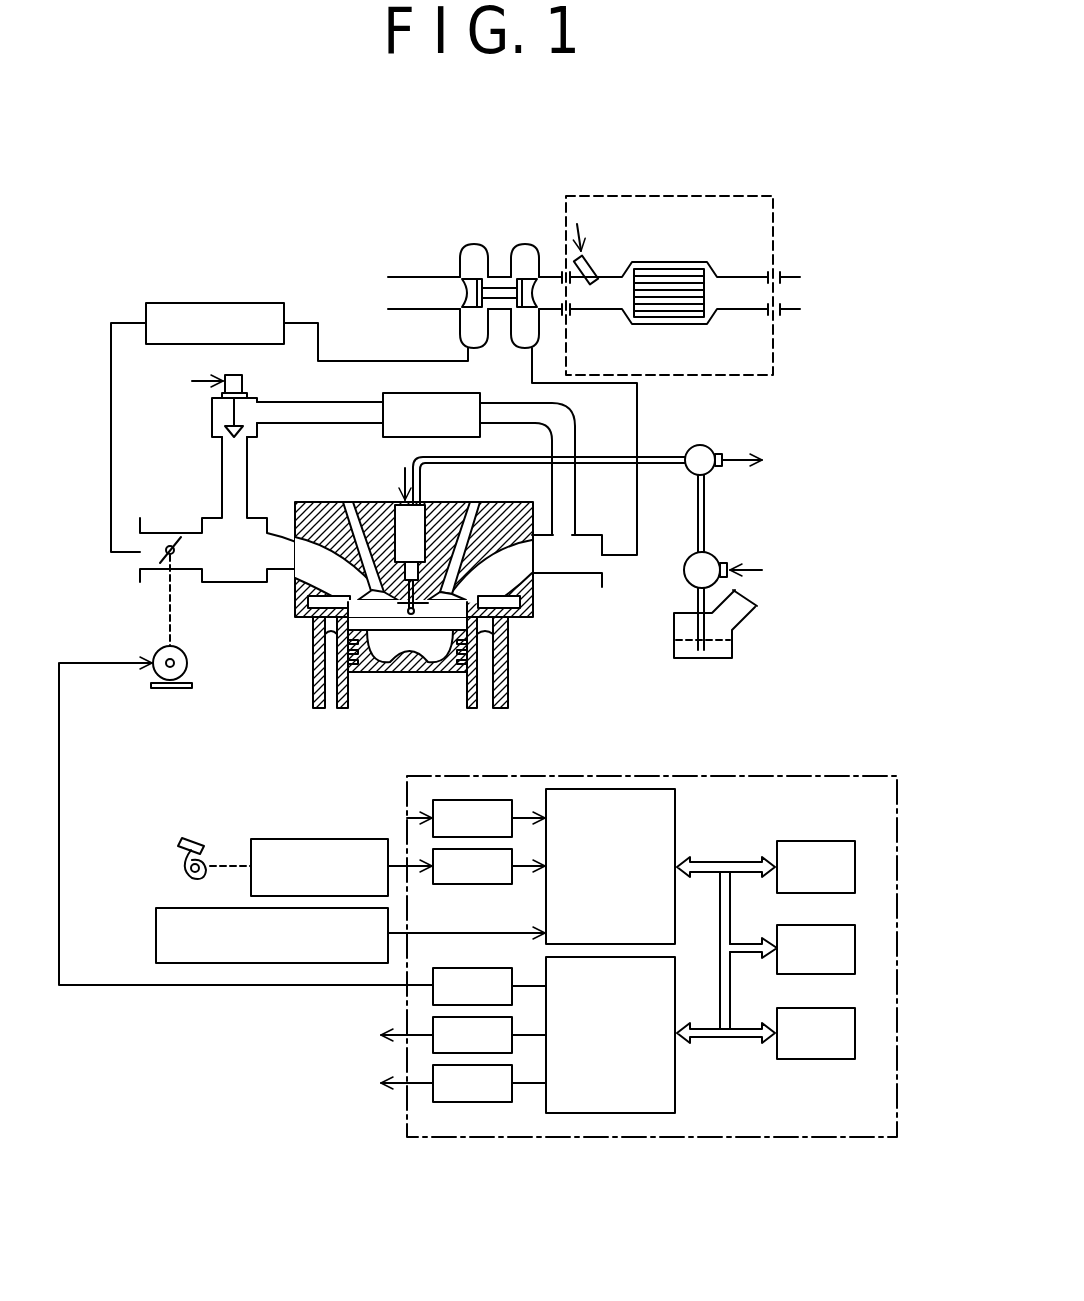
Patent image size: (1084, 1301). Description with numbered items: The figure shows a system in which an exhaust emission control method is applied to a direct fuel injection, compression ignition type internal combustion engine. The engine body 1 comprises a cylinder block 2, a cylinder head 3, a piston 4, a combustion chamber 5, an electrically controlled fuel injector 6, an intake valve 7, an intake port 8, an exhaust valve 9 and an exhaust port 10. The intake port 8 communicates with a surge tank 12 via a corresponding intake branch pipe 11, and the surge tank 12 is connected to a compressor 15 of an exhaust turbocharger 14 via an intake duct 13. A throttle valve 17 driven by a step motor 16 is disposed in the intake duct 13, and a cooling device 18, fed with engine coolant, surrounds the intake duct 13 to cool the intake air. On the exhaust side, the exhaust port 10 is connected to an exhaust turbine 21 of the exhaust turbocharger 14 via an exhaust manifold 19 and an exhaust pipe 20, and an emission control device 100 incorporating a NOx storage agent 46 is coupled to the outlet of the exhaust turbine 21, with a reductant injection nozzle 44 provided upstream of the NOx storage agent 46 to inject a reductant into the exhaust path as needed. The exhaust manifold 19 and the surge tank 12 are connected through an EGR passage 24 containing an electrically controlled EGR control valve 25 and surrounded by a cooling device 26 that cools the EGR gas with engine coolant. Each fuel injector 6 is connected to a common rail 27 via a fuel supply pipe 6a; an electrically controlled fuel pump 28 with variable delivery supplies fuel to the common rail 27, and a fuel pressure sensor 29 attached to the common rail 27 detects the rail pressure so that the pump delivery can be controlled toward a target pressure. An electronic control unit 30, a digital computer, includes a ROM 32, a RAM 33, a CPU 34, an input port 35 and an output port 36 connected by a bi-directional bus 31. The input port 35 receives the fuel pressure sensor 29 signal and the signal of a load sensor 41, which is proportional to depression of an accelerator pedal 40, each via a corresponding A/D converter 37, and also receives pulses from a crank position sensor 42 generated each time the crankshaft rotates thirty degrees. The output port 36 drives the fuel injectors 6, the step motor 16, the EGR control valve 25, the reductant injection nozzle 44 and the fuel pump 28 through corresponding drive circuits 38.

The engine body 1 is at (427, 690).
The cylinder block 2 is at (510, 672).
The cylinder head 3 is at (449, 550).
The piston 4 is at (407, 697).
The combustion chamber 5 is at (385, 660).
The electrically controlled fuel injector 6 is at (404, 518).
The fuel supply pipe 6a is at (605, 456).
The intake valve 7 is at (322, 650).
The intake port 8 is at (292, 582).
The exhaust valve 9 is at (525, 617).
The exhaust port 10 is at (560, 578).
The intake branch pipe 11 is at (266, 588).
The surge tank 12 is at (232, 586).
The intake duct 13 is at (153, 530).
The exhaust turbocharger 14 is at (465, 281).
The compressor 15 is at (456, 338).
The step motor 16 is at (150, 672).
The throttle valve 17 is at (163, 555).
The cooling device 18 is at (234, 302).
The exhaust manifold 19 is at (584, 544).
The exhaust pipe 20 is at (640, 415).
The exhaust turbine 21 is at (527, 350).
The exhaust gas recirculation passage 24 is at (275, 425).
The EGR control valve 25 is at (212, 412).
The cooling device 26 is at (381, 392).
The common rail 27 is at (689, 478).
The fuel pump 28 is at (722, 556).
The fuel pressure sensor 29 is at (730, 468).
The electronic control unit 30 is at (617, 925).
The bi-directional bus 31 is at (712, 857).
The ROM 32 is at (856, 868).
The RAM 33 is at (856, 950).
The CPU 34 is at (856, 1034).
The input port 35 is at (645, 788).
The output port 36 is at (678, 1095).
The A/D converter 37 is at (425, 862).
The drive circuit 38 is at (407, 1085).
The accelerator pedal 40 is at (178, 862).
The load sensor 41 is at (283, 838).
The crank position sensor 42 is at (156, 935).
The reductant injection nozzle 44 is at (592, 258).
The NOx storage agent 46 is at (663, 268).
The emission control device 100 is at (708, 315).